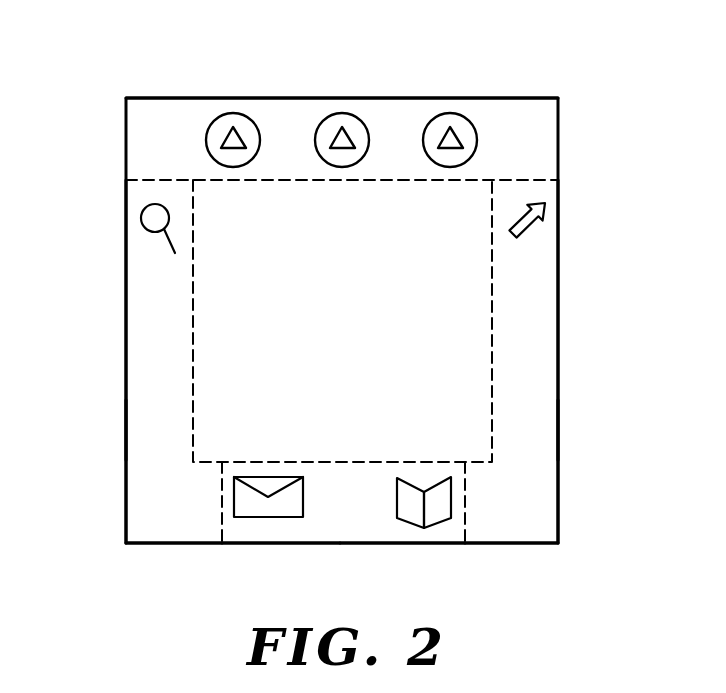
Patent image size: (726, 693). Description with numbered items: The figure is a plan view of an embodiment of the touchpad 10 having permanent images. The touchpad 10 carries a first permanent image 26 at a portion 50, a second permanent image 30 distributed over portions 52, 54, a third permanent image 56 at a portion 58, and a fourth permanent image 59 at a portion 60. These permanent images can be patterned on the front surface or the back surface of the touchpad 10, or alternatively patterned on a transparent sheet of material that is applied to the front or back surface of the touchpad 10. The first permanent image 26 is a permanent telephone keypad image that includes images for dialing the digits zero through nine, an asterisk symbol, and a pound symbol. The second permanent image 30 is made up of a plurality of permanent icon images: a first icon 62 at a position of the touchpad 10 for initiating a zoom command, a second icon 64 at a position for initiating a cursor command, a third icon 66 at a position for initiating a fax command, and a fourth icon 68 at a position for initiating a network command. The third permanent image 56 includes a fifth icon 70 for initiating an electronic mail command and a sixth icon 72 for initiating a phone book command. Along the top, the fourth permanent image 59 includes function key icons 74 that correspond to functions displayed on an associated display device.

The touchpad 10 is at (126, 122).
The first permanent image 26 is at (493, 273).
The second permanent image 30 is at (126, 418).
The portion 50 is at (463, 322).
The portion 52 is at (137, 350).
The portion 54 is at (543, 392).
The third permanent image 56 is at (298, 545).
The portion 58 is at (375, 525).
The fourth permanent image 59 is at (348, 98).
The portion 60 is at (532, 113).
The first icon 62 is at (150, 250).
The second icon 64 is at (538, 237).
The third icon 66 is at (167, 516).
The fourth icon 68 is at (523, 517).
The fifth icon 70 is at (303, 504).
The sixth icon 72 is at (433, 518).
The function key icons 74 is at (215, 120).